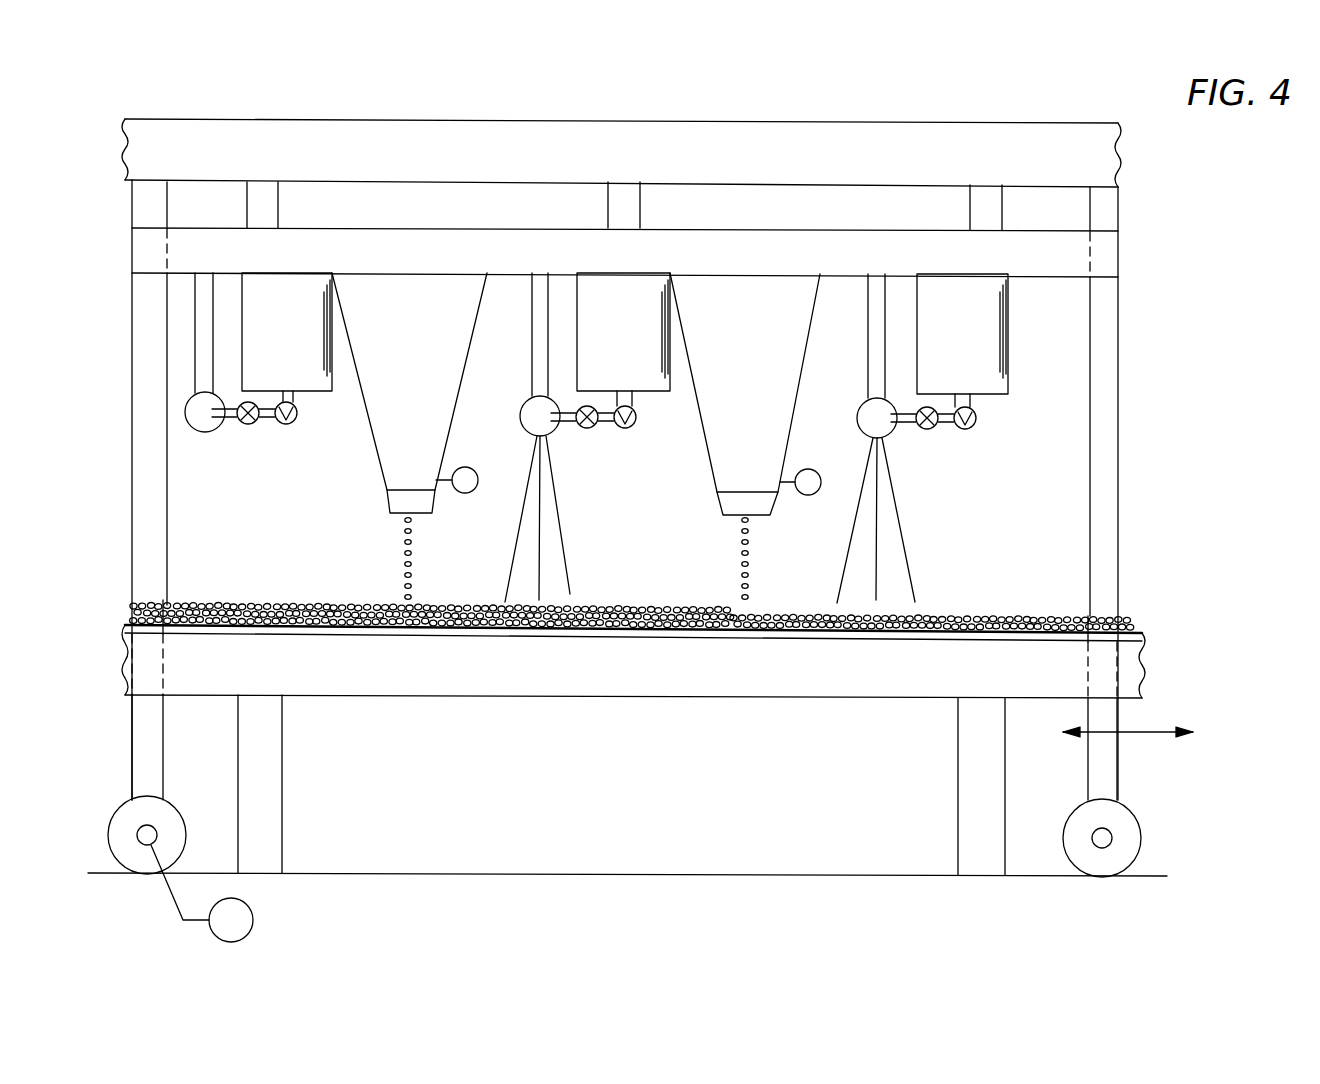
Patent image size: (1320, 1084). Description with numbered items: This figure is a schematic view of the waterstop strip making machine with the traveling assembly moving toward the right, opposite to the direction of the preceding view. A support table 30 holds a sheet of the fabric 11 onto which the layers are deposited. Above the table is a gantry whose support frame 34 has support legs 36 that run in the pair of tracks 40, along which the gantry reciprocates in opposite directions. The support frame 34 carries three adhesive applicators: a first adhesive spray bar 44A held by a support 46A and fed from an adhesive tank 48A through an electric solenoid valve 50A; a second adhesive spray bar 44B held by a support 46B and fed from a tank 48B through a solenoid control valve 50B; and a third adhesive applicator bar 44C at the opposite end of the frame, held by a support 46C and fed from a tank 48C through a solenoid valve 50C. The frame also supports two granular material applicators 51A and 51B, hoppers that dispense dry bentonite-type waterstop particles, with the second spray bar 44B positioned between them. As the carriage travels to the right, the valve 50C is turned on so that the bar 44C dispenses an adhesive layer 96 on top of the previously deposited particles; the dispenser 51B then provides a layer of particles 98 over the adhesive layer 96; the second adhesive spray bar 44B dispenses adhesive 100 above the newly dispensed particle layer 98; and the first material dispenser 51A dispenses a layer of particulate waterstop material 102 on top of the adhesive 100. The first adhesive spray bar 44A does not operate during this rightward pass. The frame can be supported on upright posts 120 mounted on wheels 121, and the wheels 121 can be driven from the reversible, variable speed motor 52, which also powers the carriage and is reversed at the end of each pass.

The tracks 40 is at (507, 138).
The support frame 34 is at (806, 250).
The support legs 36 is at (608, 203).
The support 46A is at (195, 335).
The support 46B is at (532, 338).
The support 46C is at (868, 328).
The first adhesive spray bar 44A is at (197, 430).
The second adhesive spray bar 44B is at (520, 413).
The third adhesive applicator bar 44C is at (864, 400).
The adhesive tank 48A is at (312, 324).
The adhesive tank 48B is at (618, 298).
The adhesive tank 48C is at (1000, 252).
The electric solenoid valve 50A is at (299, 414).
The solenoid control valve 50B is at (636, 418).
The solenoid valve 50C is at (976, 420).
The granular material applicator 51A is at (390, 458).
The granular material applicator 51B is at (728, 455).
The adhesive 100 is at (538, 533).
The layer of adhesive 96 is at (905, 547).
The layer of particulate waterstop material 102 is at (286, 600).
The layer of particles 98 is at (670, 577).
The fabric sheet 11 is at (130, 632).
The support table 30 is at (495, 685).
The upright posts 120 is at (130, 782).
The wheels 121 is at (175, 800).
The motor 52 is at (253, 920).